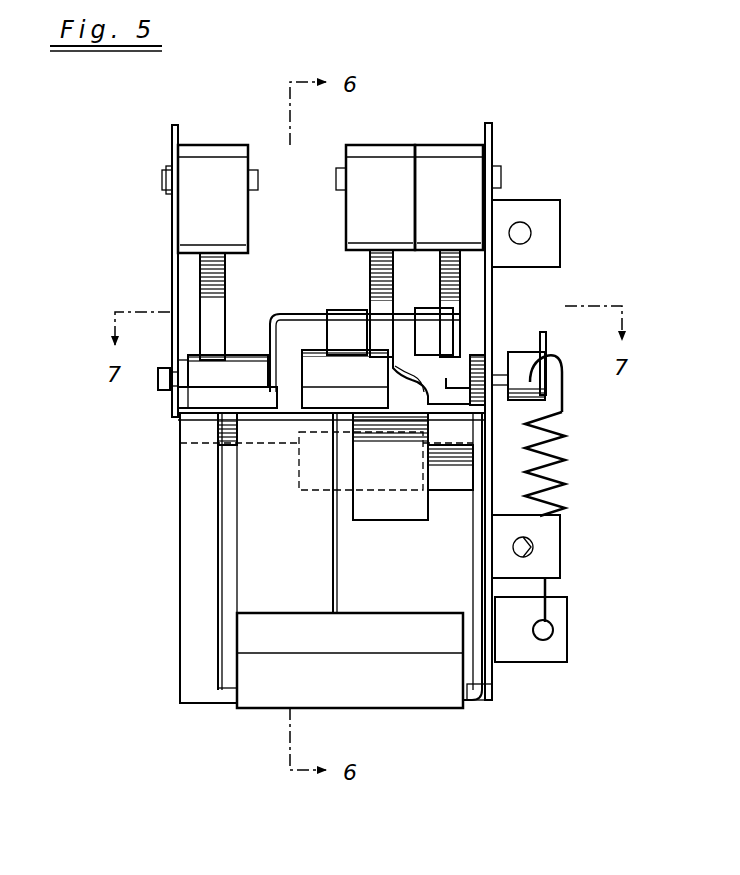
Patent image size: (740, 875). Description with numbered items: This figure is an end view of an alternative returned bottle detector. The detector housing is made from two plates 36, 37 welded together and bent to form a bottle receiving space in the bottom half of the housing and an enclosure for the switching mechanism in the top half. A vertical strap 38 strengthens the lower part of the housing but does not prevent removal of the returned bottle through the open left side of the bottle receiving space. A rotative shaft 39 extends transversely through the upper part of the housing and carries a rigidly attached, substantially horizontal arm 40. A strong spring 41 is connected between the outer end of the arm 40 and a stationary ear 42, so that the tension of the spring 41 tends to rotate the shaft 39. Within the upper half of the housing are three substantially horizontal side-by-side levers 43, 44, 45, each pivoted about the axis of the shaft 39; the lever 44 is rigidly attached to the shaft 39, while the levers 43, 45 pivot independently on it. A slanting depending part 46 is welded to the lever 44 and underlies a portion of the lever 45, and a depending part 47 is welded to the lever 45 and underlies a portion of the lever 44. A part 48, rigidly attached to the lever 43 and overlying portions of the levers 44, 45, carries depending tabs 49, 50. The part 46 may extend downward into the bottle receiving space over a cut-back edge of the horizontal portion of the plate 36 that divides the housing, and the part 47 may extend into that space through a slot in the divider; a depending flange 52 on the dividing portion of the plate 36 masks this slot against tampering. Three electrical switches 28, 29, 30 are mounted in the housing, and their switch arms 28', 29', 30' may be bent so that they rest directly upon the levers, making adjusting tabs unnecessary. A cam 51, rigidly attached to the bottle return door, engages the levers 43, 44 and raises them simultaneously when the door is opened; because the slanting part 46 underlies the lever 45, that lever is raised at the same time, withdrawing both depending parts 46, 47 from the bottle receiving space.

The electrical switch 28 is at (375, 183).
The electrical switch 29 is at (449, 183).
The electrical switch 30 is at (210, 184).
The switch arm 28' is at (365, 303).
The switch arm 29' is at (434, 303).
The switch arm 30' is at (230, 306).
The plate 36 is at (172, 276).
The plate 37 is at (492, 162).
The vertical strap 38 is at (180, 530).
The rotative shaft 39 is at (158, 384).
The horizontal arm 40 is at (546, 338).
The spring 41 is at (563, 436).
The stationary ear 42 is at (560, 642).
The lever 43 is at (247, 360).
The lever 44 is at (318, 360).
The lever 45 is at (418, 363).
The slanting depending part 46 is at (388, 520).
The depending part 47 is at (456, 490).
The part 48 is at (298, 314).
The depending tab 49 is at (338, 318).
The depending tab 50 is at (432, 315).
The cam 51 is at (384, 620).
The depending flange 52 is at (230, 432).